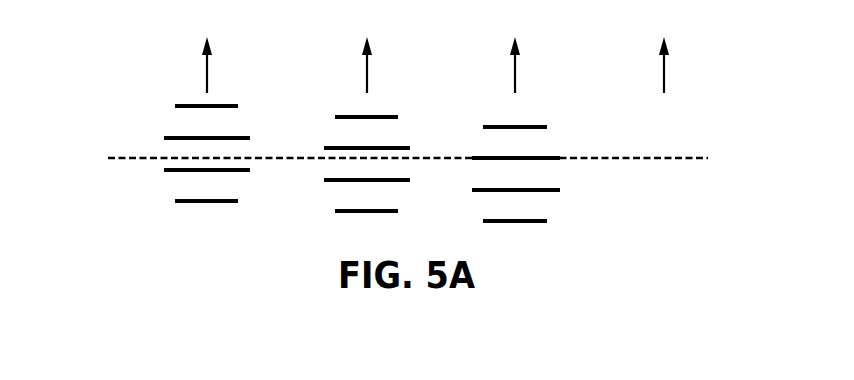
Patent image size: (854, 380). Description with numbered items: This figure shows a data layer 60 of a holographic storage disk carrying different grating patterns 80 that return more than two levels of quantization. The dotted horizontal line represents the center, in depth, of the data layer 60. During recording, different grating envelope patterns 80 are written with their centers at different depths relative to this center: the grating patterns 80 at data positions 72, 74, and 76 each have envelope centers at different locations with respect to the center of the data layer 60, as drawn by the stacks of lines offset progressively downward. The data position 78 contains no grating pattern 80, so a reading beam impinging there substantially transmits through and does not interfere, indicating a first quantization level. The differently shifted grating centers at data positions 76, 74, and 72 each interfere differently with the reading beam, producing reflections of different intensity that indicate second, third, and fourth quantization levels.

The data layer 60 is at (130, 152).
The data position 72 is at (207, 72).
The data position 74 is at (367, 72).
The data position 76 is at (515, 72).
The data position 78 is at (664, 72).
The grating pattern 80 is at (195, 203).